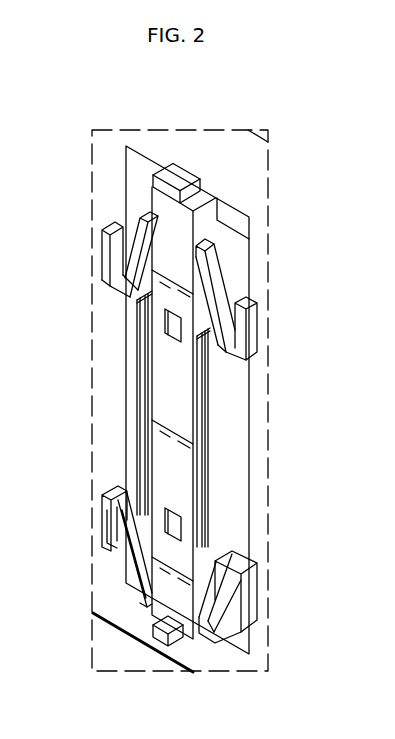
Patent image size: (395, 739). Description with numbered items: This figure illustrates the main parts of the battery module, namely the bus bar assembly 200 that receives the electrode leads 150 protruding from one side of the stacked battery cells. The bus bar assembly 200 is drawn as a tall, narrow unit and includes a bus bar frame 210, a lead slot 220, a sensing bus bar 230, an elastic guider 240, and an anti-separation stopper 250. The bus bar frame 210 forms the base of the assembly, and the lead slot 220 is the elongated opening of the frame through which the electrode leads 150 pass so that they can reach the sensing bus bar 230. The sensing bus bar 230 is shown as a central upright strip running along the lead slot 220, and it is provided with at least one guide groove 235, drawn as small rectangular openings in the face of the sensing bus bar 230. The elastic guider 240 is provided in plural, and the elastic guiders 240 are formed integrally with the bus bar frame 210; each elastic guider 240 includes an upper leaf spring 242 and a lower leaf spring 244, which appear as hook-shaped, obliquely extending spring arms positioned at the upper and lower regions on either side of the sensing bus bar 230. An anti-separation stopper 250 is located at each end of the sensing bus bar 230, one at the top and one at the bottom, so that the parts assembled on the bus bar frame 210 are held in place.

The electrode lead 150 is at (144, 343).
The bus bar assembly 200 is at (98, 636).
The bus bar frame 210 is at (170, 667).
The lead slot 220 is at (251, 444).
The sensing bus bar 230 is at (170, 393).
The guide groove 235 is at (172, 527).
The elastic guider 240 is at (96, 509).
The upper leaf spring 242 is at (234, 284).
The lower leaf spring 244 is at (228, 617).
The anti-separation stopper 250 is at (176, 178).